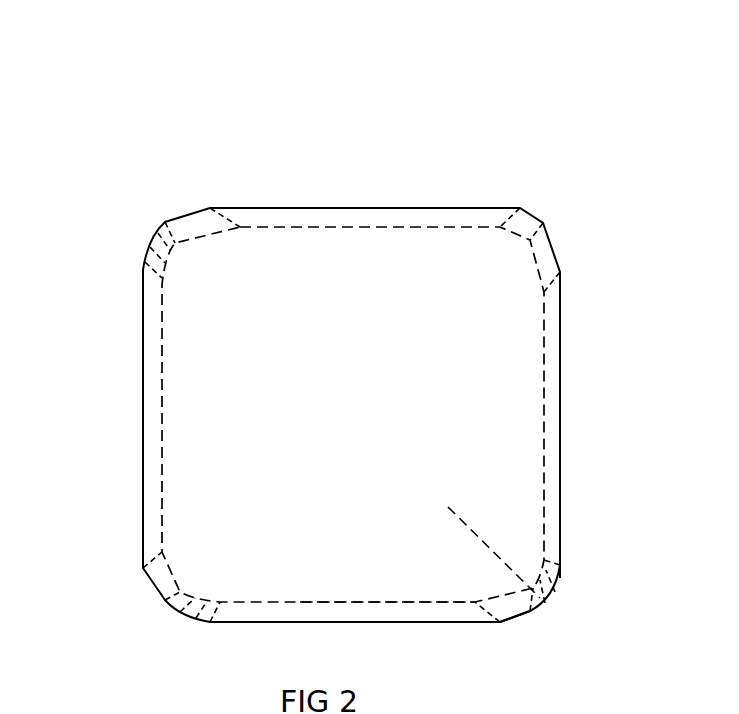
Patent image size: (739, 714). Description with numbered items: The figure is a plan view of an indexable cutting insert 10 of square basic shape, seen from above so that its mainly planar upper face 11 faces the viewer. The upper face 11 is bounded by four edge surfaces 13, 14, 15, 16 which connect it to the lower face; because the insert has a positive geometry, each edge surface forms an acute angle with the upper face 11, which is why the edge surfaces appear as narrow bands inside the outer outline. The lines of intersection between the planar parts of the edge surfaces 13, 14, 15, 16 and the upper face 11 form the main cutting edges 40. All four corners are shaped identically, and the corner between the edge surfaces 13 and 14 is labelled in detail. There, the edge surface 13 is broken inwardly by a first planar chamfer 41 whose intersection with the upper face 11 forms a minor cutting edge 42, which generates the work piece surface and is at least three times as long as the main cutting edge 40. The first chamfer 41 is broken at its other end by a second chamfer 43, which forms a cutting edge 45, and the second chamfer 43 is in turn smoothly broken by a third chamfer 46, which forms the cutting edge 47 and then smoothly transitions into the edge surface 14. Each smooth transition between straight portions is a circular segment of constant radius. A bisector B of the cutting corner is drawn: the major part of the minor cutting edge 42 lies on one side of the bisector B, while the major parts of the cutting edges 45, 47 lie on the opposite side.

The indexable cutting insert 10 is at (357, 162).
The upper face 11 is at (380, 405).
The edge surface 13 is at (420, 612).
The edge surface 14 is at (548, 404).
The edge surface 15 is at (270, 222).
The edge surface 16 is at (157, 413).
The main cutting edge 40 is at (267, 624).
The first planar chamfer 41 is at (531, 606).
The minor cutting edge 42 is at (541, 604).
The second chamfer 43 is at (556, 598).
The cutting edge 45 is at (554, 593).
The third chamfer 46 is at (564, 572).
The cutting edge 47 is at (560, 572).
The bisector B is at (465, 522).